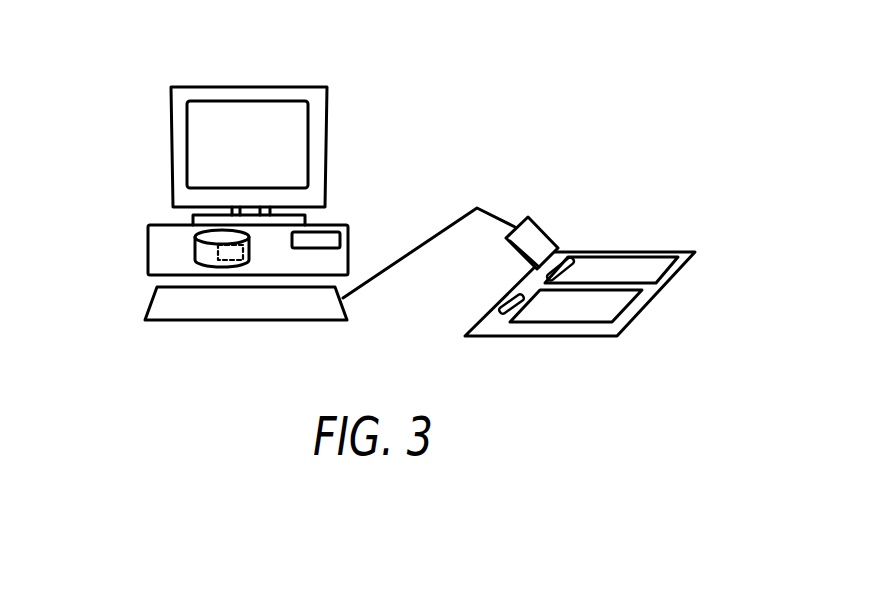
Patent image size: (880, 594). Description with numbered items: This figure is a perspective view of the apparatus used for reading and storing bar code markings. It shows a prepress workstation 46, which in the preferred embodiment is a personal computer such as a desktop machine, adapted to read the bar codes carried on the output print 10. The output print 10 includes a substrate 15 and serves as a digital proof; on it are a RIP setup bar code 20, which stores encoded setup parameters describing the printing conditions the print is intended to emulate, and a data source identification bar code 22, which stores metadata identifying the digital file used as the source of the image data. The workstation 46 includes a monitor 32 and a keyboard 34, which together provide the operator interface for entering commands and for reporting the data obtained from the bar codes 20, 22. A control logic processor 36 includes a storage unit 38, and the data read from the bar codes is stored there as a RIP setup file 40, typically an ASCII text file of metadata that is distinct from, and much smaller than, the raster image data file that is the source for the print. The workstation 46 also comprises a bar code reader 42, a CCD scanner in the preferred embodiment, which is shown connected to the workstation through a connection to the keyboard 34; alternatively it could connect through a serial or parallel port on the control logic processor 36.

The output print 10 is at (635, 315).
The substrate 15 is at (660, 285).
The RIP setup bar code 20 is at (507, 304).
The data source identification bar code 22 is at (566, 262).
The monitor 32 is at (328, 118).
The keyboard 34 is at (258, 320).
The control logic processor 36 is at (350, 227).
The storage unit 38 is at (200, 240).
The RIP setup file 40 is at (218, 250).
The bar code reader 42 is at (534, 221).
The prepress workstation 46 is at (193, 88).